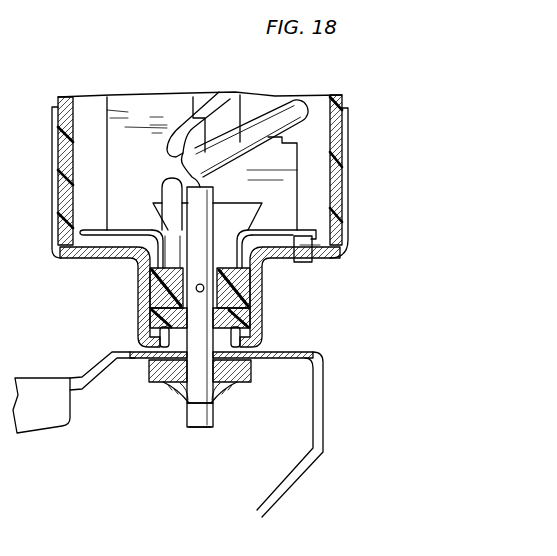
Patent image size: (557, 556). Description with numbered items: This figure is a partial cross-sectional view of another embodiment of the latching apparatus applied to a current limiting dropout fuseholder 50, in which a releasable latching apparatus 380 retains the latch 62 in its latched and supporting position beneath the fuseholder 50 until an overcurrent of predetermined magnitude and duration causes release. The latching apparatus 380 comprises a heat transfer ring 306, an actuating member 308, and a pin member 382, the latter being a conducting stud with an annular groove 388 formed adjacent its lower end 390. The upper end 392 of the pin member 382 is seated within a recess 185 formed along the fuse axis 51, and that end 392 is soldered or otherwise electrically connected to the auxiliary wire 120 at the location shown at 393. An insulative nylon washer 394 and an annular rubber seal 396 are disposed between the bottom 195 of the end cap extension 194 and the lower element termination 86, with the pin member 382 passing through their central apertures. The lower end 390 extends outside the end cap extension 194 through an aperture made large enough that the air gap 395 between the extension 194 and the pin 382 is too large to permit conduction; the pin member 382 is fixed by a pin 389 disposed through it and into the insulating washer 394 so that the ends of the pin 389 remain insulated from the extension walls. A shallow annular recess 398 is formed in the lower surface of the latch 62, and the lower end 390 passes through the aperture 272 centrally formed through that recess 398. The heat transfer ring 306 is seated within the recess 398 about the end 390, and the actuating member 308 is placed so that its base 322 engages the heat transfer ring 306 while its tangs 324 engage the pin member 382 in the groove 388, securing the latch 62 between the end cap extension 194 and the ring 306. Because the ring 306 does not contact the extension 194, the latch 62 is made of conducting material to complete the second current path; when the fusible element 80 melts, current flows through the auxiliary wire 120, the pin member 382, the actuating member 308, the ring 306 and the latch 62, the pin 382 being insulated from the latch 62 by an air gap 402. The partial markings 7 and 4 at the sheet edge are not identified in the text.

The fuseholder 50 is at (359, 99).
The end cap extension 194 is at (140, 298).
The releasable latching apparatus 380 is at (336, 318).
The lower element termination 86 is at (92, 237).
The pin member 382 is at (204, 252).
The solder connection 393 is at (216, 185).
The recess 185 is at (216, 199).
The upper end of pin member 392 is at (216, 192).
The pin 389 is at (205, 288).
The lower end of pin member 390 is at (203, 418).
The fuse axis 51 is at (201, 478).
The auxiliary wire 120 is at (182, 124).
The fusible element 80 is at (296, 107).
The insulative nylon washer 394 is at (153, 282).
The annular rubber seal 396 is at (245, 317).
The bottom of end cap extension 195 is at (157, 340).
The air gap 402 is at (241, 338).
The latch 62 is at (40, 383).
The heat transfer ring 306 is at (262, 375).
The annular recess 398 is at (146, 366).
The base portion 322 is at (270, 393).
The air gap 395 is at (182, 388).
The aperture 272 is at (231, 388).
The actuating member 308 is at (183, 392).
The latching tangs 324 is at (184, 405).
The annular groove 388 is at (217, 407).
The cut-off numeral 7 is at (2, 328).
The cut-off numeral 4 is at (2, 546).